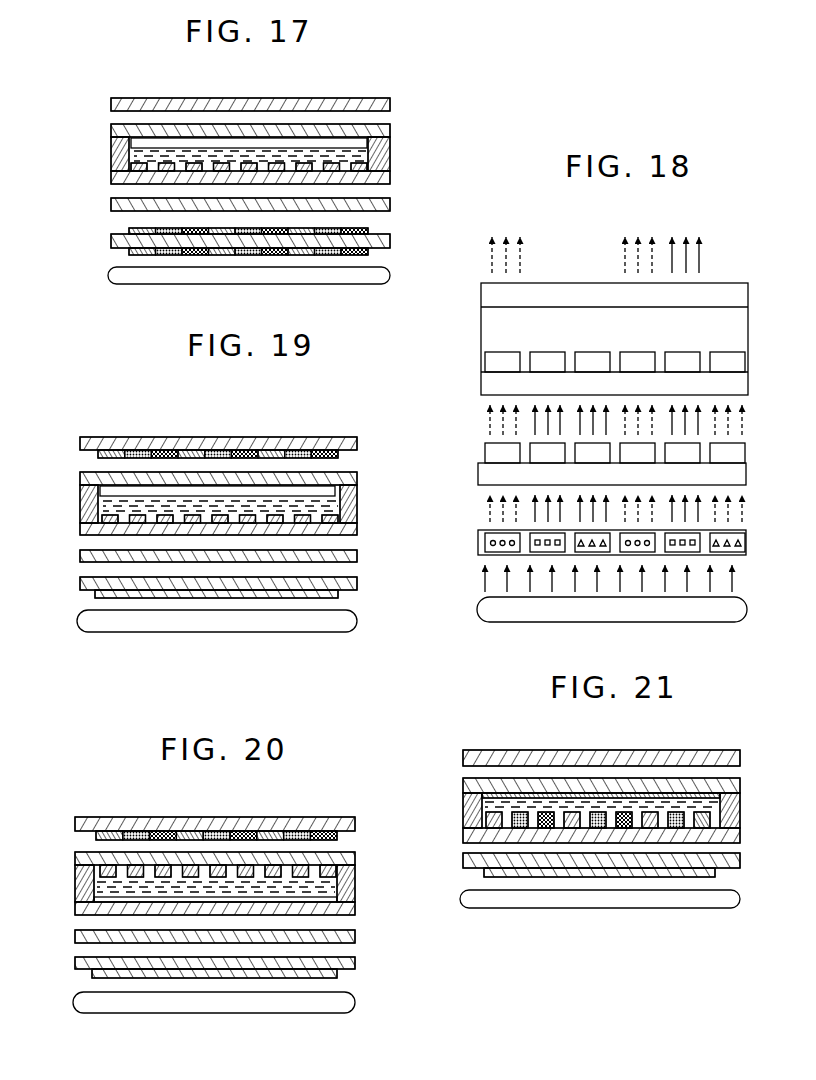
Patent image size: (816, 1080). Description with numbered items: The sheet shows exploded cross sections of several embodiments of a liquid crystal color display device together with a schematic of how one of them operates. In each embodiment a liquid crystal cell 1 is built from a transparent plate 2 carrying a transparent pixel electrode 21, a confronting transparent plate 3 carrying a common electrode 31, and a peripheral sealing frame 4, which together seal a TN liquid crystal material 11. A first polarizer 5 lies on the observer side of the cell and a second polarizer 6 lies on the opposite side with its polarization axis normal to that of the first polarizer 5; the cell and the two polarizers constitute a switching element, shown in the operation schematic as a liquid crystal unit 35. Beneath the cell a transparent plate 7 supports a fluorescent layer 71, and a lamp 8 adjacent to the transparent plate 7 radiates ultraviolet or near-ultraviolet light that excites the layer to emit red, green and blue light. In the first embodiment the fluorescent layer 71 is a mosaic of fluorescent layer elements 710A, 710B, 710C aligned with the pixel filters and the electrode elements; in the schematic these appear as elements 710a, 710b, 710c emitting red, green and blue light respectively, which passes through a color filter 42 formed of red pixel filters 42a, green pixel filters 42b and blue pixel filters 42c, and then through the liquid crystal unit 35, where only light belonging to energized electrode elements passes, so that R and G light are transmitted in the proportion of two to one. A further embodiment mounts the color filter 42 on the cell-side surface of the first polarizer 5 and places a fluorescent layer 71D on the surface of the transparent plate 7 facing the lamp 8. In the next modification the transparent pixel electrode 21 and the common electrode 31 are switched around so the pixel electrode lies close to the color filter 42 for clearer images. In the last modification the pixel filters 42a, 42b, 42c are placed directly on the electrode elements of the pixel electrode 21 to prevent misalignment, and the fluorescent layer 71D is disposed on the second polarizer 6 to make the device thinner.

In FIG. 17, the liquid crystal cell 1 is at (268, 149).
In FIG. 19, the liquid crystal cell 1 is at (220, 522).
In FIG. 20, the liquid crystal cell 1 is at (228, 882).
In FIG. 21, the liquid crystal cell 1 is at (601, 810).
In FIG. 17, the transparent plate 2 is at (270, 181).
In FIG. 19, the transparent plate 2 is at (236, 530).
In FIG. 20, the transparent plate 2 is at (233, 911).
In FIG. 21, the transparent plate 2 is at (618, 838).
In FIG. 17, the transparent plate 3 is at (390, 131).
In FIG. 19, the transparent plate 3 is at (357, 478).
In FIG. 20, the transparent plate 3 is at (355, 860).
In FIG. 21, the transparent plate 3 is at (740, 785).
In FIG. 17, the peripheral sealing frame 4 is at (119, 150).
In FIG. 19, the peripheral sealing frame 4 is at (89, 505).
In FIG. 20, the peripheral sealing frame 4 is at (82, 885).
In FIG. 21, the peripheral sealing frame 4 is at (470, 815).
In FIG. 17, the first polarizer 5 is at (390, 104).
In FIG. 19, the first polarizer 5 is at (357, 443).
In FIG. 20, the first polarizer 5 is at (355, 823).
In FIG. 21, the first polarizer 5 is at (740, 757).
In FIG. 17, the second polarizer 6 is at (270, 208).
In FIG. 19, the second polarizer 6 is at (357, 557).
In FIG. 20, the second polarizer 6 is at (355, 937).
In FIG. 21, the second polarizer 6 is at (740, 862).
In FIG. 17, the transparent plate 7 is at (118, 243).
In FIG. 19, the transparent plate 7 is at (357, 583).
In FIG. 20, the transparent plate 7 is at (355, 962).
In FIG. 17, the lamp 8 is at (389, 280).
In FIG. 18, the lamp 8 is at (747, 610).
In FIG. 19, the lamp 8 is at (352, 632).
In FIG. 20, the lamp 8 is at (345, 1013).
In FIG. 21, the lamp 8 is at (730, 908).
In FIG. 17, the TN liquid crystal material 11 is at (366, 154).
In FIG. 19, the TN liquid crystal material 11 is at (335, 503).
In FIG. 20, the TN liquid crystal material 11 is at (335, 885).
In FIG. 21, the TN liquid crystal material 11 is at (718, 810).
In FIG. 17, the transparent pixel electrode 21 is at (130, 166).
In FIG. 18, the transparent pixel electrode 21 is at (485, 362).
In FIG. 19, the transparent pixel electrode 21 is at (105, 521).
In FIG. 20, the transparent pixel electrode 21 is at (100, 868).
In FIG. 21, the transparent pixel electrode 21 is at (557, 823).
In FIG. 17, the common electrode 31 is at (136, 140).
In FIG. 19, the common electrode 31 is at (100, 490).
In FIG. 20, the common electrode 31 is at (94, 900).
In FIG. 21, the common electrode 31 is at (484, 794).
In FIG. 17, the liquid crystal unit 35 is at (288, 155).
In FIG. 18, the liquid crystal unit 35 is at (625, 339).
In FIG. 17, the color filter 42 is at (249, 230).
In FIG. 18, the color filter 42 is at (530, 444).
In FIG. 19, the color filter 42 is at (236, 417).
In FIG. 20, the color filter 42 is at (226, 808).
In FIG. 17, the red pixel filter 42a is at (135, 233).
In FIG. 19, the red pixel filter 42a is at (107, 450).
In FIG. 20, the red pixel filter 42a is at (105, 832).
In FIG. 21, the red pixel filter 42a is at (490, 812).
In FIG. 17, the green pixel filter 42b is at (160, 229).
In FIG. 19, the green pixel filter 42b is at (140, 452).
In FIG. 20, the green pixel filter 42b is at (135, 832).
In FIG. 21, the green pixel filter 42b is at (515, 806).
In FIG. 17, the blue pixel filter 42c is at (185, 226).
In FIG. 19, the blue pixel filter 42c is at (168, 452).
In FIG. 20, the blue pixel filter 42c is at (160, 832).
In FIG. 21, the blue pixel filter 42c is at (540, 802).
In FIG. 17, the fluorescent layer 71 is at (273, 282).
In FIG. 18, the fluorescent layer 71 is at (600, 563).
In FIG. 19, the fluorescent layer 71D is at (338, 594).
In FIG. 20, the fluorescent layer 71D is at (337, 973).
In FIG. 21, the fluorescent layer 71D is at (715, 872).
In FIG. 17, the fluorescent layer element 710A is at (145, 257).
In FIG. 17, the fluorescent layer element 710B is at (168, 257).
In FIG. 17, the fluorescent layer element 710C is at (200, 257).
In FIG. 18, the fluorescent layer element 710a is at (485, 543).
In FIG. 18, the fluorescent layer element 710b is at (527, 555).
In FIG. 18, the fluorescent layer element 710c is at (580, 556).